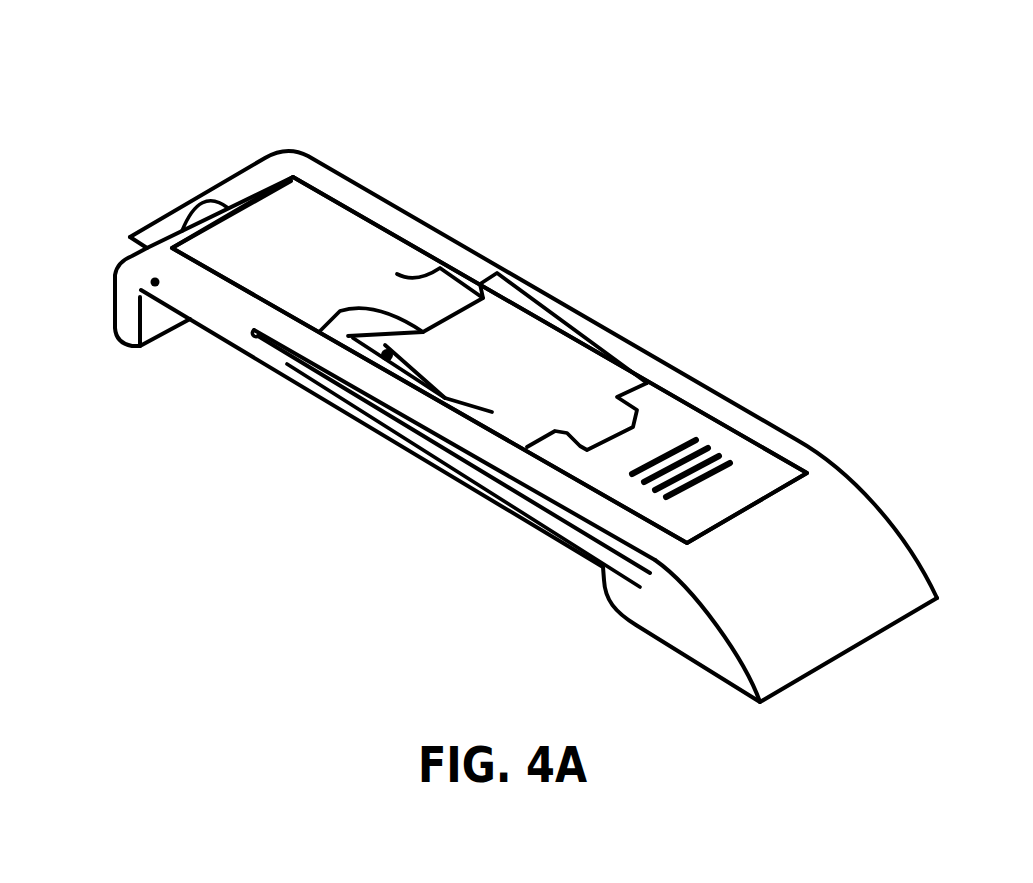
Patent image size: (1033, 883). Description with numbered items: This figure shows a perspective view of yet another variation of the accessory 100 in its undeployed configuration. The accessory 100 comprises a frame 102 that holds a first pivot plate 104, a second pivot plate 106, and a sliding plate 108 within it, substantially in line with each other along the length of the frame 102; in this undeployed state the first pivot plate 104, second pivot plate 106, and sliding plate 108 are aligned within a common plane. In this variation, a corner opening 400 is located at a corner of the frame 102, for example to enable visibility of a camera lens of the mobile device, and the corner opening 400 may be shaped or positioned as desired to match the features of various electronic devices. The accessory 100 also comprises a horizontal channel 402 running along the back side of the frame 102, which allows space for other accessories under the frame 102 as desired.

The accessory 100 is at (680, 262).
The frame 102 is at (223, 310).
The first pivot plate 104 is at (288, 282).
The second pivot plate 106 is at (504, 370).
The sliding plate 108 is at (745, 463).
The corner opening 400 is at (165, 233).
The horizontal channel 402 is at (387, 485).